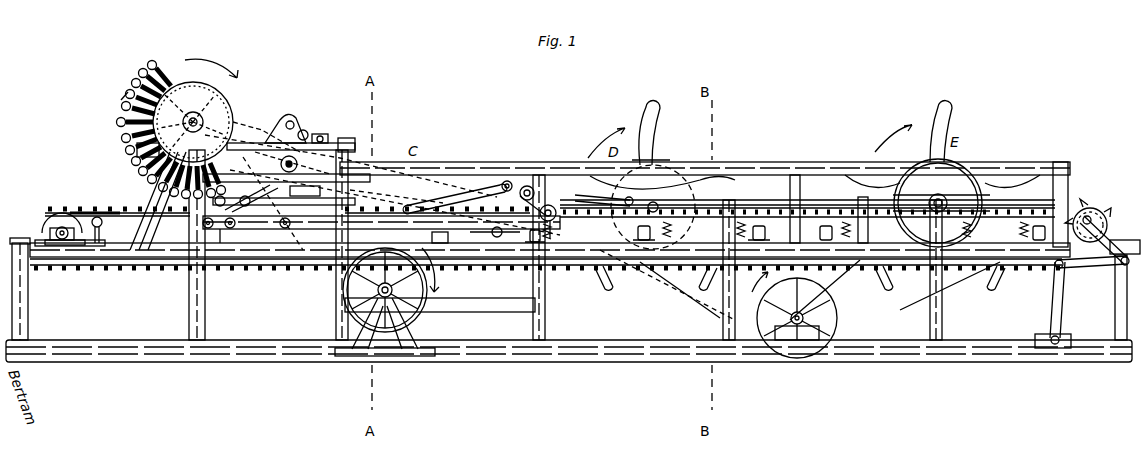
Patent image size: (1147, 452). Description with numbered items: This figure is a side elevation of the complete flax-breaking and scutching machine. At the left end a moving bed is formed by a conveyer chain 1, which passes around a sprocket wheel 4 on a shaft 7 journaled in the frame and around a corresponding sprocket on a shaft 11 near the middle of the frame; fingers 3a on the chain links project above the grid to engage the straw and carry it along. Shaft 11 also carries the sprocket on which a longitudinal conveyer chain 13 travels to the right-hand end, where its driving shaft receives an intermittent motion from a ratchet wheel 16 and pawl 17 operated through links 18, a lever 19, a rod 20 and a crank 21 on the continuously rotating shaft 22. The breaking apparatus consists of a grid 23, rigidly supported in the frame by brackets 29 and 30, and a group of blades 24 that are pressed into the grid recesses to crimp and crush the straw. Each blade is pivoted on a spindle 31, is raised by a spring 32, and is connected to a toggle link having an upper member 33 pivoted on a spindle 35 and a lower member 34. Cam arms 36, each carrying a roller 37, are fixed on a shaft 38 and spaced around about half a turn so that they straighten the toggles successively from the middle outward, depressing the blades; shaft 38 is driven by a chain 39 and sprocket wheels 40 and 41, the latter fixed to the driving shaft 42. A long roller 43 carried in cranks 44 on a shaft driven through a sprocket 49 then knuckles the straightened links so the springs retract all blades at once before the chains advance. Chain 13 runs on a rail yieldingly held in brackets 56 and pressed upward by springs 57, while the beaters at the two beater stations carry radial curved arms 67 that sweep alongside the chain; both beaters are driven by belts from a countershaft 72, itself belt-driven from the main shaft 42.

The conveyer belt or chain 1 is at (55, 214).
The fingers 3a is at (88, 215).
The sprocket wheel 4 is at (63, 229).
The shaft 7 is at (40, 233).
The shaft 11 is at (497, 238).
The conveyer chain 13 is at (633, 270).
The ratchet wheel 16 is at (1106, 222).
The pawl 17 is at (1128, 255).
The links 18 is at (1097, 264).
The lever 19 is at (1066, 297).
The rod 20 is at (1020, 200).
The crank 21 is at (529, 188).
The shaft 22 is at (550, 240).
The grid 23 is at (268, 229).
The blades 24 is at (455, 199).
The bracket 29 is at (214, 236).
The bracket 30 is at (432, 237).
The spindle 31 is at (507, 181).
The spring 32 is at (330, 148).
The upper toggle link member 33 is at (285, 119).
The lower toggle link member 34 is at (284, 198).
The spindle 35 is at (306, 133).
The arm 36 is at (180, 93).
The roller 37 is at (124, 92).
The shaft 38 is at (193, 122).
The chain 39 is at (262, 130).
The sprocket wheel 40 is at (238, 100).
The sprocket wheel 41 is at (346, 312).
The driving shaft 42 is at (376, 292).
The roller 43 is at (299, 193).
The cranks 44 is at (292, 163).
The sprocket 49 is at (115, 212).
The bracket 56 is at (572, 230).
The spring 57 is at (727, 232).
The radial curved arms or blades 67 is at (660, 123).
The countershaft 72 is at (805, 318).